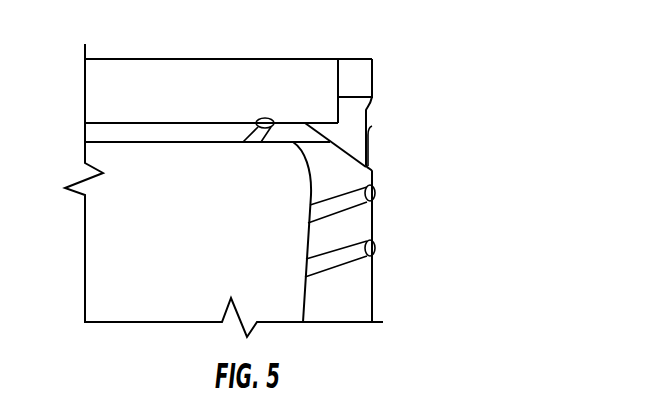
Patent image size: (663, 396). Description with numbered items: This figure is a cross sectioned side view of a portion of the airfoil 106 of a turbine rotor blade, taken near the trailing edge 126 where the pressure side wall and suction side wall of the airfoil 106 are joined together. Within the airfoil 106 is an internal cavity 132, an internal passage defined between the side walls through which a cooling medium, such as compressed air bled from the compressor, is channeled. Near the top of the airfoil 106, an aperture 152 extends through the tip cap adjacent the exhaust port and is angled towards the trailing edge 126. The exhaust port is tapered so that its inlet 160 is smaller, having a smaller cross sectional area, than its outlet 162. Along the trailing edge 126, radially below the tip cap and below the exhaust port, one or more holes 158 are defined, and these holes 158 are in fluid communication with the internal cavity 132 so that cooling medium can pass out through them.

The airfoil 106 is at (422, 21).
The trailing edge 126 is at (379, 69).
The internal cavity 132 is at (146, 300).
The aperture 152 is at (261, 118).
The holes 158 is at (376, 191).
The inlet 160 is at (336, 110).
The outlet 162 is at (377, 137).